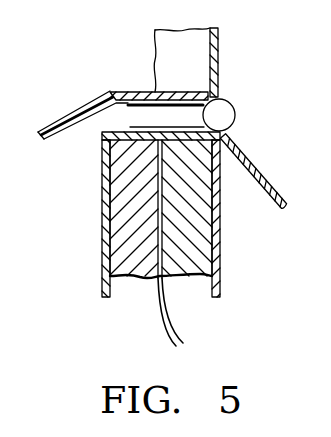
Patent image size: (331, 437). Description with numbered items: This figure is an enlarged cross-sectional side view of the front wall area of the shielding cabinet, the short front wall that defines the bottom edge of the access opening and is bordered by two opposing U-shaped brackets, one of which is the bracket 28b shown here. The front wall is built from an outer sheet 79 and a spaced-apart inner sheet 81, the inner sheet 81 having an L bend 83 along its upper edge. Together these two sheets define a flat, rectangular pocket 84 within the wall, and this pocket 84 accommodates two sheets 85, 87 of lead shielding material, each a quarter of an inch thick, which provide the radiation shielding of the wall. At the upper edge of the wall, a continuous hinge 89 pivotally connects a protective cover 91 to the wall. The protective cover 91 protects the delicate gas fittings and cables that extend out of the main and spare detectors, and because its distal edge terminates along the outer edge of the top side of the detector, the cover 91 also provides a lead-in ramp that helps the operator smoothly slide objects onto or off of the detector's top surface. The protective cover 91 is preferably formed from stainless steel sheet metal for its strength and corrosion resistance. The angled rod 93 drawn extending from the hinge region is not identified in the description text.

The U-shaped bracket 28b is at (162, 49).
The protective cover 91 is at (82, 108).
The continuous hinge 89 is at (227, 113).
The rod / pin 93 is at (243, 157).
The L bend 83 is at (104, 132).
The inner sheet 81 is at (102, 215).
The outer sheet 79 is at (217, 264).
The sheet of lead shielding material 85 is at (130, 247).
The sheet of lead shielding material 87 is at (190, 265).
The pocket 84 is at (135, 282).